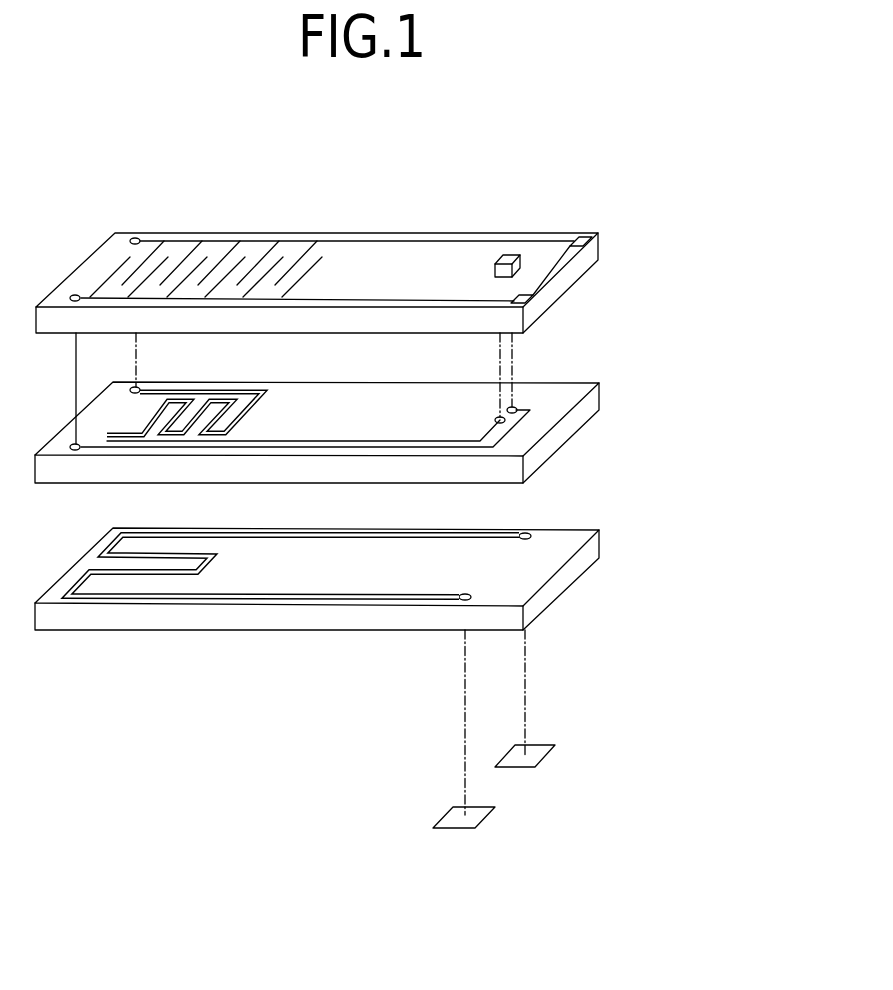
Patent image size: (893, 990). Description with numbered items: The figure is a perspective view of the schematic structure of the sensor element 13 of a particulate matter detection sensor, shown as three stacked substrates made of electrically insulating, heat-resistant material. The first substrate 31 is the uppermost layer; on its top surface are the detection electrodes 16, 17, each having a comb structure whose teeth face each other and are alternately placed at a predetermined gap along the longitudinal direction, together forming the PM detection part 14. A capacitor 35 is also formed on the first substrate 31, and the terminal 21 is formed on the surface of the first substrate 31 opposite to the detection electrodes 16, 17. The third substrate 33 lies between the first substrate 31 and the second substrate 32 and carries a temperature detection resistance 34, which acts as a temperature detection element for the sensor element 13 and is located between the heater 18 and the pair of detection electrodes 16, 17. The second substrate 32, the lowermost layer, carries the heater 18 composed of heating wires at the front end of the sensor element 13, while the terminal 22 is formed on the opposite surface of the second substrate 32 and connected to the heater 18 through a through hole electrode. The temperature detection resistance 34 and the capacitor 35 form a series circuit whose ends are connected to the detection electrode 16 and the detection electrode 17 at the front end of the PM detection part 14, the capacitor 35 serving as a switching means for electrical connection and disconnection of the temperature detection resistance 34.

The sensor element 13 is at (685, 255).
The PM detection part 14 is at (228, 233).
The detection electrode 16 is at (166, 249).
The detection electrode 17 is at (182, 284).
The heater 18 is at (173, 598).
The terminal 21 is at (527, 294).
The terminal 22 is at (481, 808).
The first substrate 31 is at (556, 297).
The second substrate 32 is at (563, 578).
The third substrate 33 is at (565, 432).
The temperature detection resistance 34 is at (263, 403).
The capacitor 35 is at (508, 255).